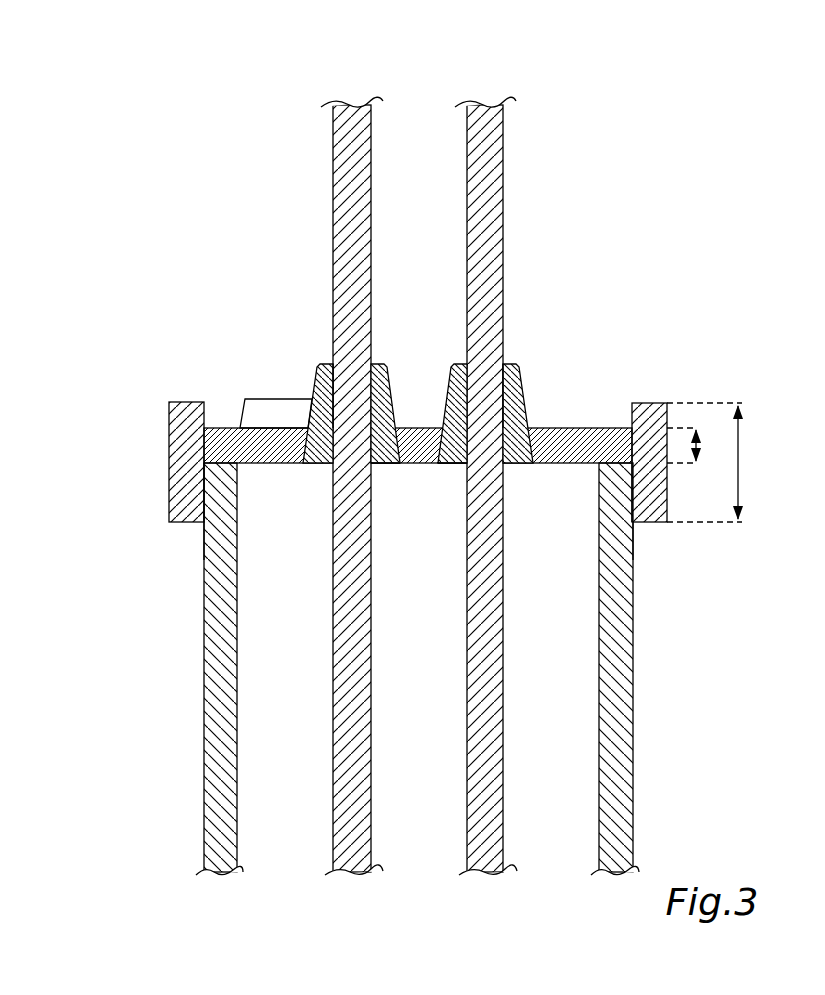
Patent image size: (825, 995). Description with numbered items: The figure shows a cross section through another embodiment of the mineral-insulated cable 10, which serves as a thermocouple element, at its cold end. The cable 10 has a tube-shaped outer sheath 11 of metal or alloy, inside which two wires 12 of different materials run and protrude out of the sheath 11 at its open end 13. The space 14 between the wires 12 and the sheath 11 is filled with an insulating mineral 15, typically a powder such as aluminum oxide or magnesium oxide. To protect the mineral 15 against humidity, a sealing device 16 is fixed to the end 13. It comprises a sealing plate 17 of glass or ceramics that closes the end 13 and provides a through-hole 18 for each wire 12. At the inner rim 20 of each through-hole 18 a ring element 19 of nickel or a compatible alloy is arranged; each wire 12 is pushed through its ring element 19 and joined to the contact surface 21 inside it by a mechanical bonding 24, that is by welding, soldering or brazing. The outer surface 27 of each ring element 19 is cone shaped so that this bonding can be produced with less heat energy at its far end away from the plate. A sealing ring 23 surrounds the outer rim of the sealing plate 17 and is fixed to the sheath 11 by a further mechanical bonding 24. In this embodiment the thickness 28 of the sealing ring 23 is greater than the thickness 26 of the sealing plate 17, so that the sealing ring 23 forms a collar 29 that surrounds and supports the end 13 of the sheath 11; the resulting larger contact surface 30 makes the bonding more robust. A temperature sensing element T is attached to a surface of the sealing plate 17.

The mineral-insulated cable 10 is at (677, 597).
The outer sheath 11 is at (627, 691).
The wires 12 is at (338, 588).
The end of sheath 13 is at (167, 443).
The space 14 is at (255, 768).
The insulating mineral 15 is at (271, 747).
The sealing device 16 is at (608, 250).
The sealing plate 17 is at (579, 428).
The through-hole 18 is at (387, 468).
The ring element 19 is at (411, 393).
The inner rim 20 is at (477, 444).
The contact surface 21 is at (337, 377).
The sealing ring 23 is at (670, 420).
The mechanical bonding 24 is at (374, 360).
The thickness of sealing plate 26 is at (700, 447).
The outer surface of ring element 27 is at (527, 412).
The thickness of sealing ring 28 is at (742, 455).
The collar 29 is at (208, 479).
The contact surface 30 is at (207, 500).
The temperature sensing element T is at (243, 407).